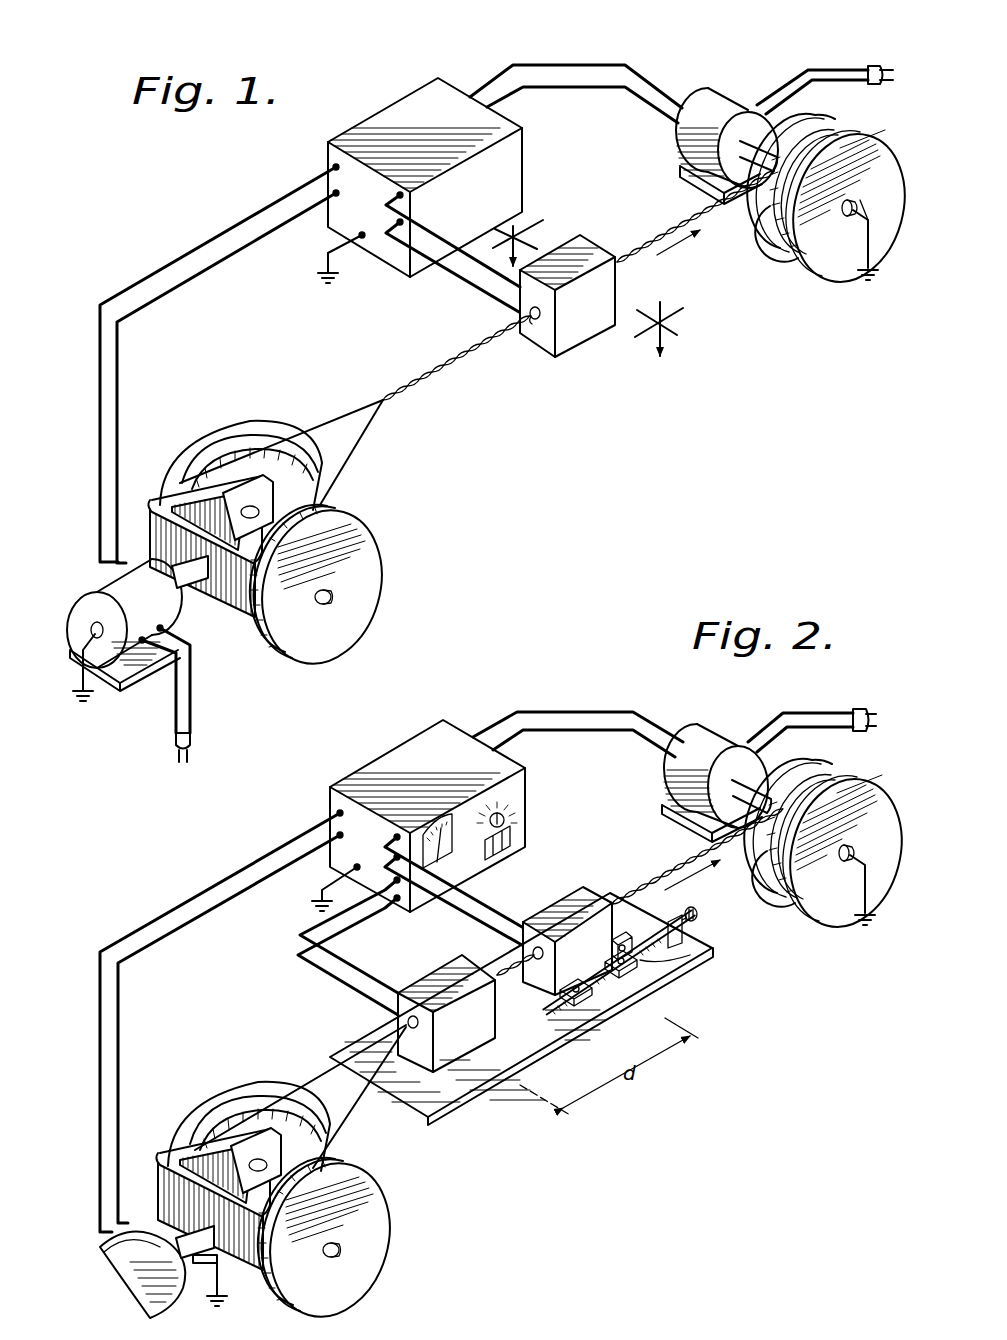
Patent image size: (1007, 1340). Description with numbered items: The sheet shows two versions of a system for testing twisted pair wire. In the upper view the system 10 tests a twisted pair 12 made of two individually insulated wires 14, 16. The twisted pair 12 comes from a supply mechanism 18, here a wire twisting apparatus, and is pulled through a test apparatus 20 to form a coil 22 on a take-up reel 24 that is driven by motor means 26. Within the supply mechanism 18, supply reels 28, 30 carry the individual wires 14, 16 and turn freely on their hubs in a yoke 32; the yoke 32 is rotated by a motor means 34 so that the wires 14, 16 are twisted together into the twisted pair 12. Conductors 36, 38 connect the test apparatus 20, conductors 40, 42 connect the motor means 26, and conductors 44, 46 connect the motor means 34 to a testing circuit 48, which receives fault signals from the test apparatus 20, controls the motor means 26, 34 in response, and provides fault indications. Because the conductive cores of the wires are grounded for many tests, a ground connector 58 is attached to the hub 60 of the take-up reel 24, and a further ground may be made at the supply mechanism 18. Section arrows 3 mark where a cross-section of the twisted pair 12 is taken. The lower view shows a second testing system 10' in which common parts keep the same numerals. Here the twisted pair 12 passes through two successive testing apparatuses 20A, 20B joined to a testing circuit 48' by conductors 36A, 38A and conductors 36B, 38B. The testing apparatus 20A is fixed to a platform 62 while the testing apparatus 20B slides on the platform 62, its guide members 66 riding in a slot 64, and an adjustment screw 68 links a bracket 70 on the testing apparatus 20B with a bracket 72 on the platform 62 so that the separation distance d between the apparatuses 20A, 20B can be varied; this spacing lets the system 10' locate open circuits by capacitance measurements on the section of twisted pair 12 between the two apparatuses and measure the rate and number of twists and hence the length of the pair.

In FIG. 1, the system 10 is at (254, 151).
In FIG. 2, the testing system 10' is at (150, 845).
In FIG. 1, the twisted pair 12 is at (442, 358).
In FIG. 2, the twisted pair 12 is at (686, 862).
In FIG. 1, the individually insulated wire 14 is at (327, 417).
In FIG. 2, the individually insulated wire 14 is at (310, 1072).
In FIG. 1, the individually insulated wire 16 is at (350, 452).
In FIG. 2, the individually insulated wire 16 is at (337, 1110).
In FIG. 1, the supply mechanism 18 is at (262, 405).
In FIG. 2, the supply mechanism 18 is at (235, 1066).
In FIG. 1, the test apparatus 20 is at (592, 342).
In FIG. 2, the testing apparatus 20A is at (427, 967).
In FIG. 2, the testing apparatus 20B is at (573, 880).
In FIG. 1, the coil 22 is at (763, 240).
In FIG. 2, the coil 22 is at (789, 854).
In FIG. 1, the take-up reel 24 is at (838, 265).
In FIG. 2, the take-up reel 24 is at (852, 837).
In FIG. 1, the motor means 26 is at (712, 93).
In FIG. 2, the motor means 26 is at (713, 722).
In FIG. 1, the supply reel 28 is at (213, 432).
In FIG. 2, the supply reel 28 is at (247, 1112).
In FIG. 1, the supply reel 30 is at (372, 568).
In FIG. 2, the supply reel 30 is at (362, 1240).
In FIG. 1, the yoke 32 is at (153, 493).
In FIG. 2, the yoke 32 is at (206, 1187).
In FIG. 1, the motor means 34 is at (110, 582).
In FIG. 2, the motor means 34 is at (122, 1262).
In FIG. 1, the conductor 36 is at (440, 233).
In FIG. 1, the conductor 38 is at (460, 280).
In FIG. 2, the conductor 36A is at (312, 928).
In FIG. 2, the conductor 38A is at (313, 970).
In FIG. 2, the conductor 36B is at (495, 902).
In FIG. 2, the conductor 38B is at (467, 910).
In FIG. 1, the conductor 40 is at (598, 65).
In FIG. 2, the conductor 40 is at (584, 712).
In FIG. 1, the conductor 42 is at (587, 92).
In FIG. 2, the conductor 42 is at (585, 735).
In FIG. 1, the conductor 44 is at (227, 232).
In FIG. 2, the conductor 44 is at (165, 917).
In FIG. 1, the conductor 46 is at (202, 277).
In FIG. 2, the conductor 46 is at (202, 918).
In FIG. 1, the testing circuit 48 is at (425, 154).
In FIG. 2, the testing circuit 48' is at (427, 816).
In FIG. 1, the ground connector 58 is at (873, 263).
In FIG. 2, the ground connector 58 is at (875, 909).
In FIG. 1, the hub 60 is at (852, 200).
In FIG. 2, the platform 62 is at (452, 1100).
In FIG. 2, the slot 64 is at (600, 994).
In FIG. 2, the guide member 66 is at (630, 970).
In FIG. 2, the adjustment screw 68 is at (660, 946).
In FIG. 2, the bracket 70 is at (618, 947).
In FIG. 2, the bracket 72 is at (682, 912).
In FIG. 1, the section line 3- 3 is at (588, 299).